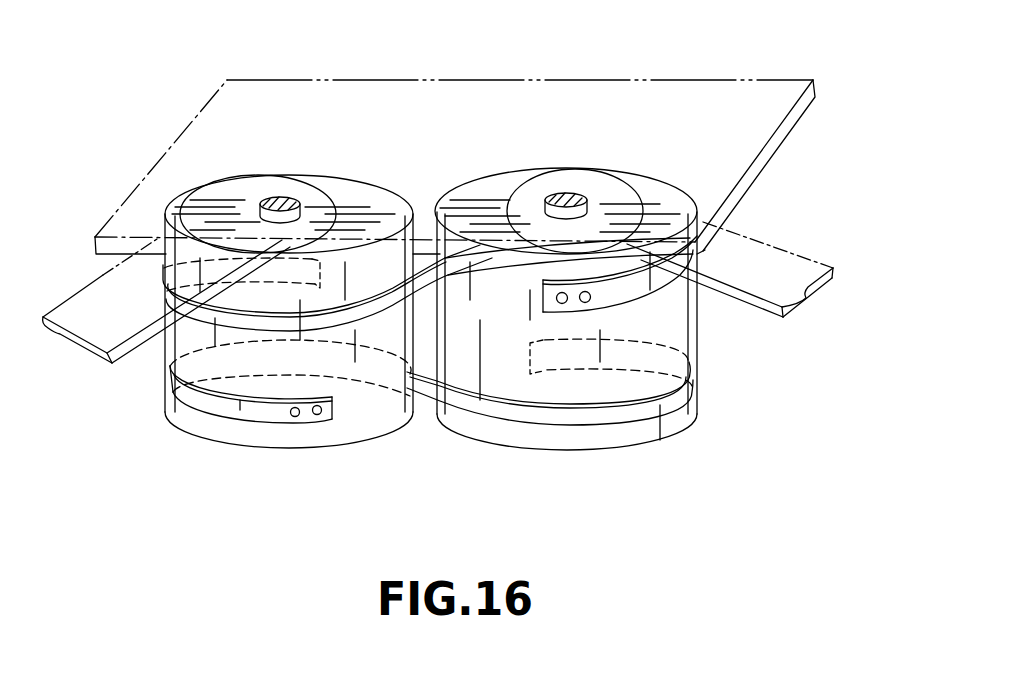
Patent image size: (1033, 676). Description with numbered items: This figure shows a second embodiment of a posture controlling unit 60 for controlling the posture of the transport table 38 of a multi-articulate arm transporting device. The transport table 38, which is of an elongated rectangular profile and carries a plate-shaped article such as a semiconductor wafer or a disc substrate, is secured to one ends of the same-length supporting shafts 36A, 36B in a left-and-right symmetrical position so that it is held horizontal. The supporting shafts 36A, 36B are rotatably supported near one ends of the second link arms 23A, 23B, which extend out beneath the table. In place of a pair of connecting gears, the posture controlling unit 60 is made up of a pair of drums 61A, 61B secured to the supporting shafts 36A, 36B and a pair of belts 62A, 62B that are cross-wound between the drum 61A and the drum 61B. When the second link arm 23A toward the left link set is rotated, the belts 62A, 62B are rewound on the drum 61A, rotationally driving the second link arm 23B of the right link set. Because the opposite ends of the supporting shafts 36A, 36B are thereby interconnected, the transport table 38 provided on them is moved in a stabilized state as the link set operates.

The transport table 38 is at (625, 80).
The second link arm 23A is at (92, 347).
The second link arm 23B is at (802, 298).
The supporting shaft 36A is at (262, 206).
The supporting shaft 36B is at (587, 199).
The posture controlling unit 60 is at (474, 330).
The drum 61A is at (253, 433).
The drum 61B is at (617, 430).
The belt 62A is at (368, 312).
The belt 62B is at (507, 413).